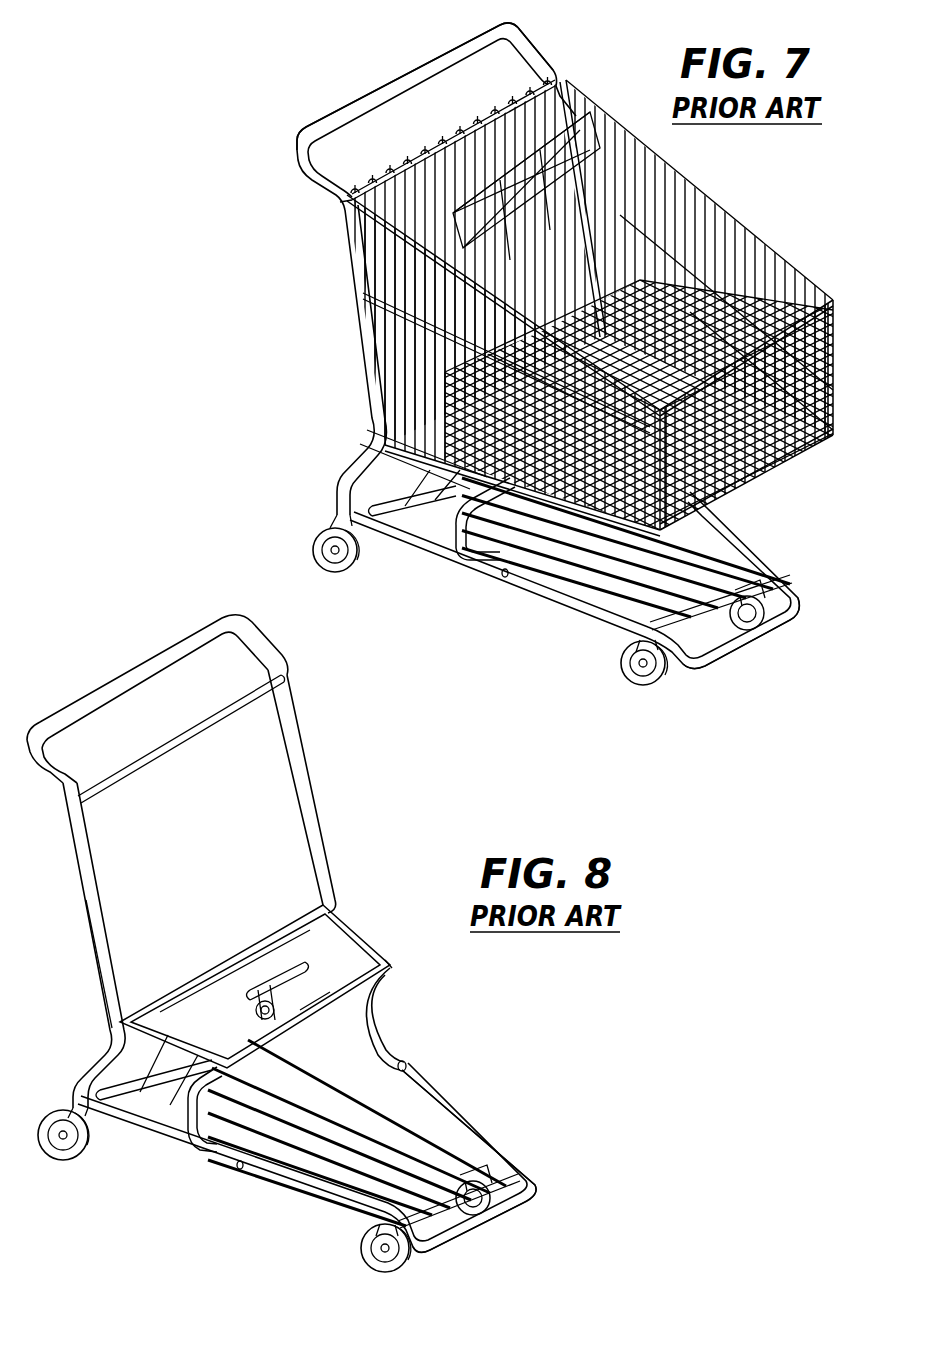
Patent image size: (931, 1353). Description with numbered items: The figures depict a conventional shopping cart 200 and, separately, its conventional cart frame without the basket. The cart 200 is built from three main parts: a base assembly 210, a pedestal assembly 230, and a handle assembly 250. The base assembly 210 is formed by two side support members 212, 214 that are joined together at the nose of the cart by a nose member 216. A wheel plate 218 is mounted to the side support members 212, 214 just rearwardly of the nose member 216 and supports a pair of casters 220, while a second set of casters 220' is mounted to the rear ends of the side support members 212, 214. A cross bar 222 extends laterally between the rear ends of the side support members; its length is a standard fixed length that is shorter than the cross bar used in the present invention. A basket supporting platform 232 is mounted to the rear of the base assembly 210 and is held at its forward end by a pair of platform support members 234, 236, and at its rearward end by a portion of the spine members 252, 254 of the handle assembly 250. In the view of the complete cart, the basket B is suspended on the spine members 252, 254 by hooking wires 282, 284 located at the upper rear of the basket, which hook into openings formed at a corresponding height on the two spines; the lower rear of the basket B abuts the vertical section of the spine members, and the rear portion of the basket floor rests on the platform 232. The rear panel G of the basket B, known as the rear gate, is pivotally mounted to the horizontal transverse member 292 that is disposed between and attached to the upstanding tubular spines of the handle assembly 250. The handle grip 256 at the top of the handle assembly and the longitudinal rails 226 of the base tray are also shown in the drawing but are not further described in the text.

In FIG. 7, the cart 200 is at (258, 97).
In FIG. 7, the handle 256 is at (398, 74).
In FIG. 8, the handle 256 is at (122, 667).
In FIG. 7, the hooking wire 284 is at (548, 84).
In FIG. 7, the rear panel G is at (486, 158).
In FIG. 7, the horizontal transverse member 292 is at (428, 152).
In FIG. 8, the horizontal transverse member 292 is at (157, 742).
In FIG. 7, the hooking wire 282 is at (343, 208).
In FIG. 7, the handle assembly 250 is at (357, 331).
In FIG. 8, the handle assembly 250 is at (87, 926).
In FIG. 7, the basket B is at (836, 355).
In FIG. 7, the casters 220' is at (281, 543).
In FIG. 8, the casters 220' is at (70, 1190).
In FIG. 7, the wheel plate 218 is at (760, 578).
In FIG. 8, the wheel plate 218 is at (488, 1168).
In FIG. 7, the platform support member 234 is at (460, 538).
In FIG. 8, the platform support member 234 is at (190, 1136).
In FIG. 7, the tray rails 226 is at (580, 578).
In FIG. 7, the base assembly 210 is at (580, 630).
In FIG. 8, the base assembly 210 is at (320, 1196).
In FIG. 7, the casters 220 is at (623, 701).
In FIG. 8, the casters 220 is at (448, 1258).
In FIG. 7, the member 216 is at (712, 660).
In FIG. 8, the member 216 is at (482, 1228).
In FIG. 8, the spine member 254 is at (305, 800).
In FIG. 8, the spine member 252 is at (100, 958).
In FIG. 8, the cross bar 222 is at (205, 1005).
In FIG. 8, the pedestal assembly 230 is at (370, 935).
In FIG. 8, the basket supporting platform 232 is at (392, 978).
In FIG. 8, the platform support member 236 is at (366, 1016).
In FIG. 8, the side support member 214 is at (455, 1113).
In FIG. 8, the side support member 212 is at (295, 1192).